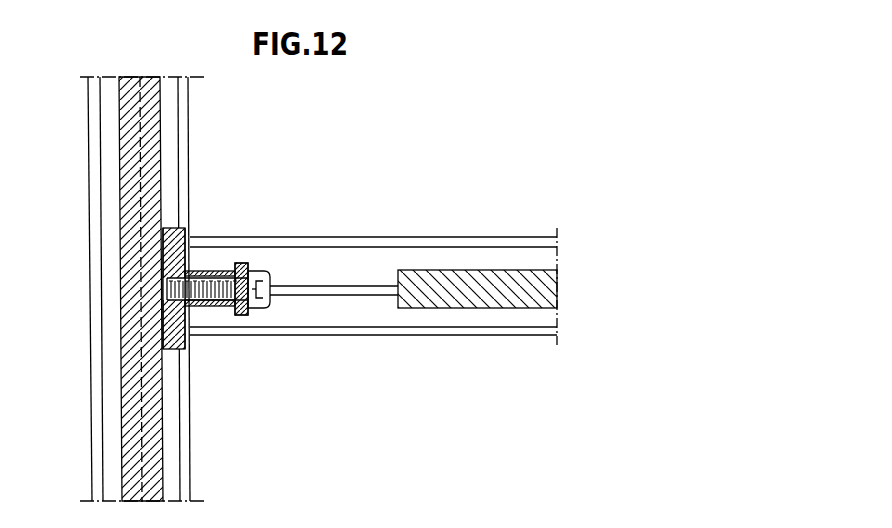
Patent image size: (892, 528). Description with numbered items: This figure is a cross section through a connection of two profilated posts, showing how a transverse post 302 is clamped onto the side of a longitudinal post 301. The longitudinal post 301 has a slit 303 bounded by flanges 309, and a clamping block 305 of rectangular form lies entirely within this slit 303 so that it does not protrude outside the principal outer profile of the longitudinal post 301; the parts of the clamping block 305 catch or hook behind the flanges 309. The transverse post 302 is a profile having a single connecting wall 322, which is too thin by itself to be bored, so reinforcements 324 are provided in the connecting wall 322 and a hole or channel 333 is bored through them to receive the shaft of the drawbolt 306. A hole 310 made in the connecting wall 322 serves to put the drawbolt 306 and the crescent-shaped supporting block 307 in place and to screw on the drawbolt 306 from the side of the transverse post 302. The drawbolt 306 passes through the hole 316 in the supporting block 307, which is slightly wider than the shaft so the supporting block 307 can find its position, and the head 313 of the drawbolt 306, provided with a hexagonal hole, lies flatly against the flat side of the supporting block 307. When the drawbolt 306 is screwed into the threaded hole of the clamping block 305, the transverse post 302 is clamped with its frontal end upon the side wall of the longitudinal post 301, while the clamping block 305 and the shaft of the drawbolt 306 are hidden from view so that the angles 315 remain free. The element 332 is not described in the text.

The longitudinal post 301 is at (90, 208).
The flanges 309 is at (187, 158).
The slit 303 is at (177, 431).
The single connecting wall 322 is at (137, 434).
The clamping block 305 is at (188, 240).
The transverse post 302 is at (350, 245).
The angles 315 is at (197, 330).
The sleeve 332 is at (223, 273).
The hole or channel 333 is at (220, 307).
The drawbolt 306 is at (243, 268).
The hole in the supporting block 316 is at (246, 274).
The supporting block 307 is at (250, 306).
The head of the draw bolt 313 is at (269, 306).
The hole 310 is at (350, 297).
The reinforcements 324 is at (450, 297).